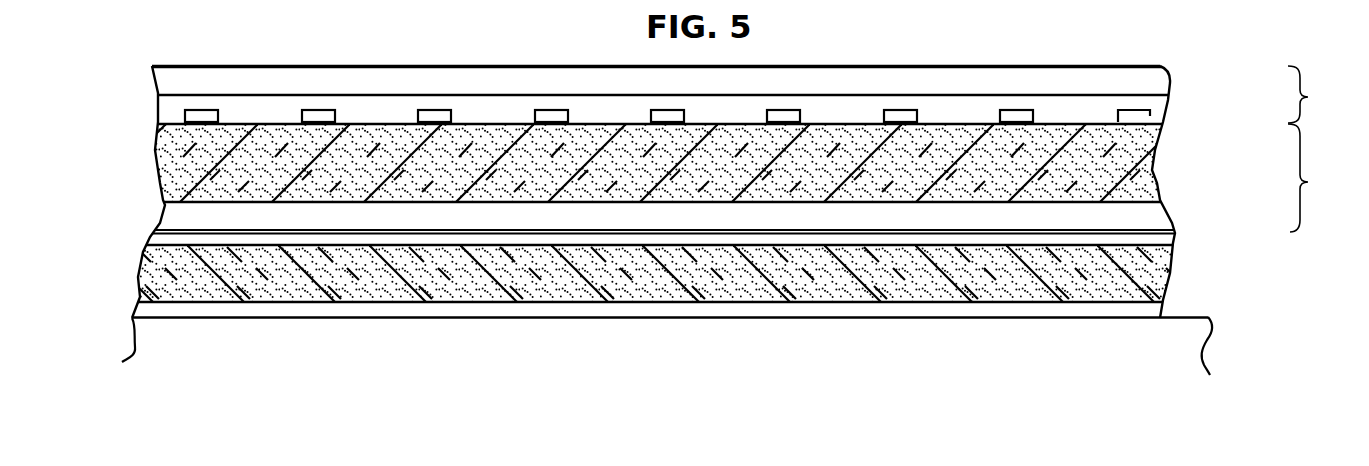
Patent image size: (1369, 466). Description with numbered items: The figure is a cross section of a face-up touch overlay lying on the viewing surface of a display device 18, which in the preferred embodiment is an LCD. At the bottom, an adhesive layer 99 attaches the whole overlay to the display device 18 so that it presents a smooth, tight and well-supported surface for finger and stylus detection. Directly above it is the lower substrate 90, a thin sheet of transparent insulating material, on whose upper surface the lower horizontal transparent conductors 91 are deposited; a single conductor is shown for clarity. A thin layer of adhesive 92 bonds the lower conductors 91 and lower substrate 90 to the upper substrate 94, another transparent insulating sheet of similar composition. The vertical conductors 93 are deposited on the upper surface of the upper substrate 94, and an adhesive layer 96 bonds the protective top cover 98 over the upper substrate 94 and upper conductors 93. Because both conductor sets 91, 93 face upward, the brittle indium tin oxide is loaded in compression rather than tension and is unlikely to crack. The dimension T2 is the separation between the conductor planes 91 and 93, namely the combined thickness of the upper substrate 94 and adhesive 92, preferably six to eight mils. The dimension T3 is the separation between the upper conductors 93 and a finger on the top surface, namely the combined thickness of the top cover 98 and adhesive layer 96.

The protective top cover 98 is at (1157, 83).
The adhesive layer 96 is at (1160, 104).
The vertical conductors 93 is at (1150, 121).
The upper substrate 94 is at (1148, 167).
The adhesive 92 is at (1152, 215).
The lower horizontal transparent conductors 91 is at (1174, 238).
The lower substrate 90 is at (1153, 268).
The adhesive layer 99 is at (1157, 308).
The display device 18 is at (1212, 358).
The separation between upper conductors and top surface T3 is at (1314, 94).
The separation between conductor planes T2 is at (1314, 178).